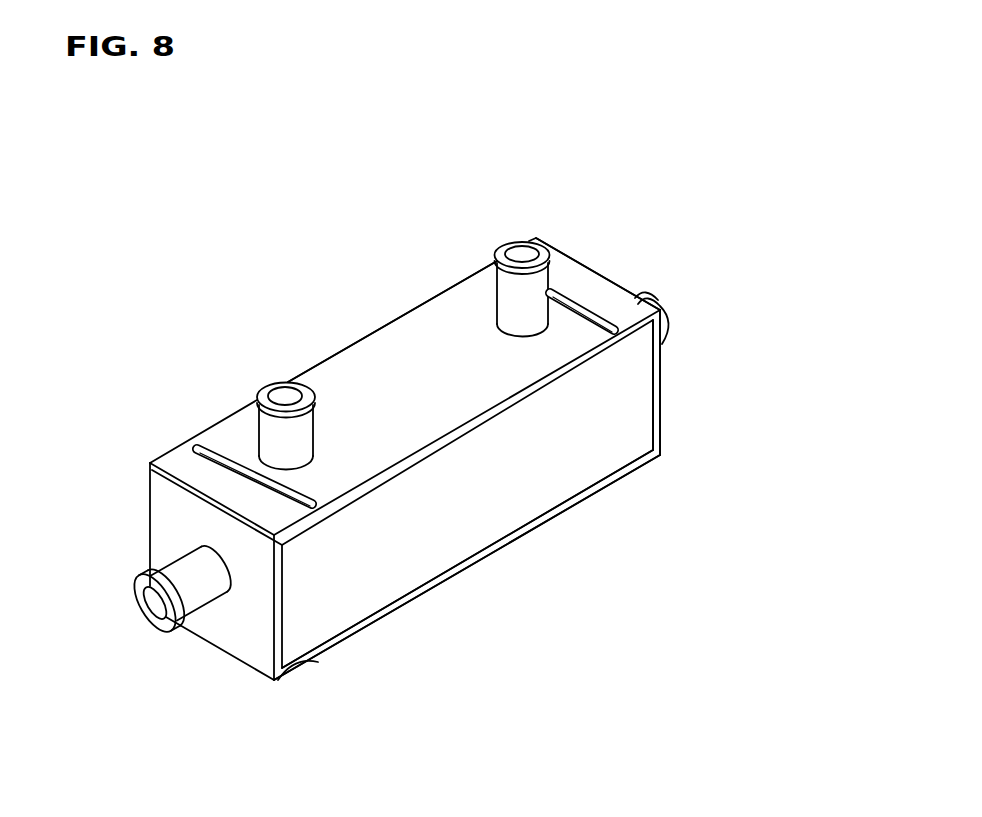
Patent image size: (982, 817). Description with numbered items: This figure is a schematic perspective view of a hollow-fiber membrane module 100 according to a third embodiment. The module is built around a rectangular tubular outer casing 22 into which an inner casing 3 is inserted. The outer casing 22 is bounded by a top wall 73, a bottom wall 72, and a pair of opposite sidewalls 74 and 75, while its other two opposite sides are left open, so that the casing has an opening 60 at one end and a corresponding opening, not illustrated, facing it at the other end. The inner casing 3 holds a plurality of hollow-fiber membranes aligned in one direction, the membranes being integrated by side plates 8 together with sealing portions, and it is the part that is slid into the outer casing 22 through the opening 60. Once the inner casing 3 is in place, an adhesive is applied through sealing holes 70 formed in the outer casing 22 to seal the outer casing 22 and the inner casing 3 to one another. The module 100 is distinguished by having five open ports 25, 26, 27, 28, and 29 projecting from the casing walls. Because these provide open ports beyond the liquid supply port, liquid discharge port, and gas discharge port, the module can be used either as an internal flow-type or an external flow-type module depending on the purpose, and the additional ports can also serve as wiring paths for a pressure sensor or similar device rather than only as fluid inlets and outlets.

The hollow-fiber membrane module 100 is at (718, 171).
The inner casing 3 is at (660, 372).
The side plate 8 is at (601, 462).
The outer casing 22 is at (623, 266).
The open port 25 is at (177, 571).
The open port 26 is at (285, 683).
The open port 27 is at (652, 290).
The open port 28 is at (308, 427).
The open port 29 is at (500, 290).
The opening 60 is at (427, 589).
The sealing hole 70 is at (214, 444).
The bottom wall 72 is at (489, 555).
The top wall 73 is at (395, 347).
The sidewall 74 is at (241, 633).
The sidewall 75 is at (666, 423).